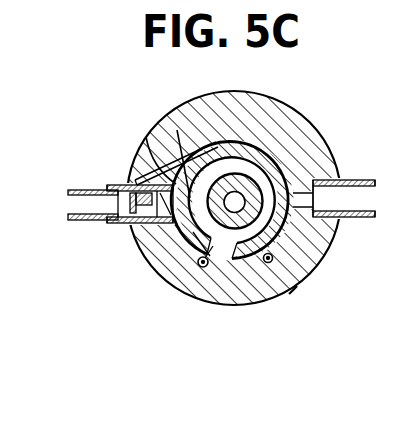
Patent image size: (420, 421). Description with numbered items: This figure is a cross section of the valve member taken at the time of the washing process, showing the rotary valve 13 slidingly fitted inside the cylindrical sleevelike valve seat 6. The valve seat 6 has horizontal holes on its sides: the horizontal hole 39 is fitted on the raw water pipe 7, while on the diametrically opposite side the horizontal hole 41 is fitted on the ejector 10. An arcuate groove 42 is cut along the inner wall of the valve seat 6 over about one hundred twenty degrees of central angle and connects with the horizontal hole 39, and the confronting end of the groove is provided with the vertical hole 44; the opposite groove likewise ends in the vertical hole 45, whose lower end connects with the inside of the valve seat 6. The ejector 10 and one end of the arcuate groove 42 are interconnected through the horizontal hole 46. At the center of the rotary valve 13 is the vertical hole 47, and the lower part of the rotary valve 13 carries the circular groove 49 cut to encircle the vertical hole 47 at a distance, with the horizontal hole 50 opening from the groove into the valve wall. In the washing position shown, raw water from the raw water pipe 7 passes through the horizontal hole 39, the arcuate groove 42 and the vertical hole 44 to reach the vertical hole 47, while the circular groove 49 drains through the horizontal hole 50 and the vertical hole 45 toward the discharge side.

The valve seat 6 is at (320, 139).
The raw water pipe 7 is at (369, 178).
The ejector 10 is at (122, 226).
The rotary valve 13 is at (196, 249).
The horizontal hole 39 is at (344, 199).
The horizontal hole 41 is at (128, 228).
The arcuate groove 42 is at (293, 211).
The vertical hole 44 is at (298, 287).
The vertical hole 45 is at (204, 268).
The horizontal hole 46 is at (147, 137).
The vertical hole 47 is at (210, 153).
The circular groove 49 is at (229, 192).
The horizontal hole 50 is at (226, 264).